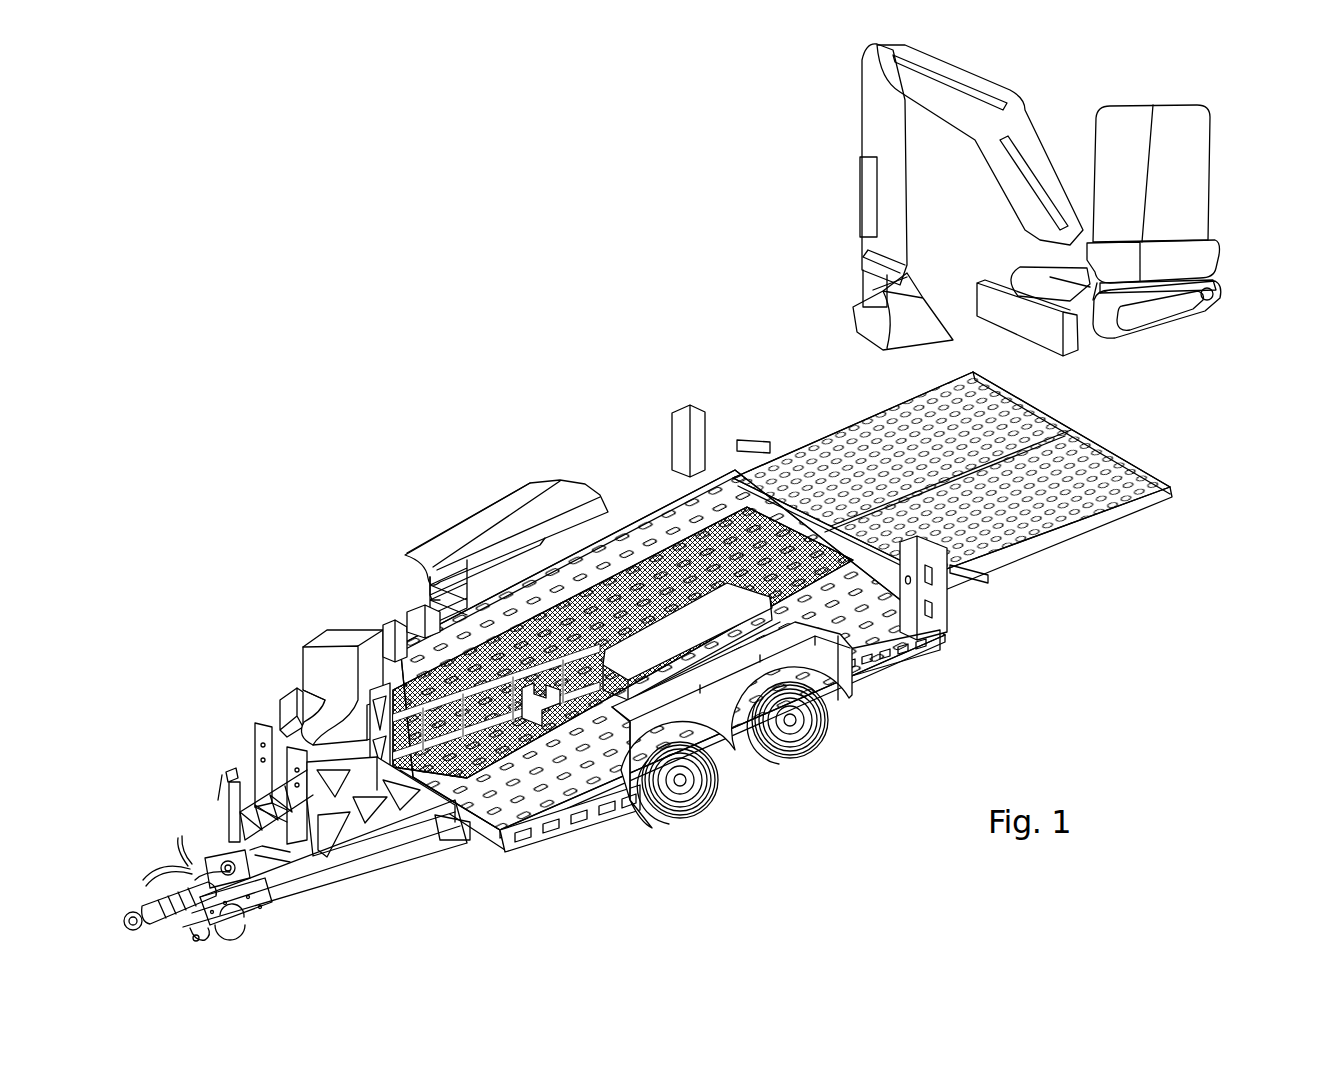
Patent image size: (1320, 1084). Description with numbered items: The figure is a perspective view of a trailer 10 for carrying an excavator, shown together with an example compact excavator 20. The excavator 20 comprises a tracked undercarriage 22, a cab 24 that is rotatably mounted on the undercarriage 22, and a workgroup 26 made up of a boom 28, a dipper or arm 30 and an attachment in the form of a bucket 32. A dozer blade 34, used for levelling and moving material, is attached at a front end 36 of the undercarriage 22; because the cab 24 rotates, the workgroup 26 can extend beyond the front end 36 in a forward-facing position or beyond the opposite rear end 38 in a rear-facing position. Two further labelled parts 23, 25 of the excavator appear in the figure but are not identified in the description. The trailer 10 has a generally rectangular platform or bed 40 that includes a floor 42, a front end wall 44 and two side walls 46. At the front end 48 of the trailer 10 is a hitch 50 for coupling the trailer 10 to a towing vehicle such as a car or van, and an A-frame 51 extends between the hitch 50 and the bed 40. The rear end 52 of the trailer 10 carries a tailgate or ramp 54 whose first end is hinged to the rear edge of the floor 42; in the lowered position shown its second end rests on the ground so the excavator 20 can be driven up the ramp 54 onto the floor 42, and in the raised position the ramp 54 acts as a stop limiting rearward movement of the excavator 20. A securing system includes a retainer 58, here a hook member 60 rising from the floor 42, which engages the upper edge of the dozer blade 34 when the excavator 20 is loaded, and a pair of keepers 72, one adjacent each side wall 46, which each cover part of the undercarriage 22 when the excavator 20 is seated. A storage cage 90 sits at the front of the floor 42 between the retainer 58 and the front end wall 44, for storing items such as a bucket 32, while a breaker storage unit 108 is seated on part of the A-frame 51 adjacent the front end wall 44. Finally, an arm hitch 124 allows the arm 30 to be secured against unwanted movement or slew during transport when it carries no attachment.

The trailer 10 is at (648, 669).
The compact excavator 20 is at (1011, 224).
The tracked undercarriage 22 is at (1187, 299).
The boom swing mount 23 is at (1031, 280).
The cab 24 is at (1185, 120).
The track frame 25 is at (991, 278).
The workgroup 26 is at (912, 196).
The boom 28 is at (990, 117).
The arm 30 is at (875, 137).
The bucket 32 is at (863, 322).
The dozer blade 34 is at (1033, 325).
The front end 36 is at (1082, 316).
The rear end 38 is at (1216, 274).
The platform or bed 40 is at (623, 557).
The floor 42 is at (655, 705).
The front end wall 44 is at (434, 795).
The side walls 46 is at (312, 693).
The front end 48 is at (326, 883).
The hitch 50 is at (155, 915).
The A-frame 51 is at (355, 870).
The rear end 52 is at (953, 612).
The ramp 54 is at (1055, 530).
The retainer 58 is at (418, 625).
The hook member 60 is at (395, 633).
The keepers 72 is at (507, 537).
The storage cage 90 is at (490, 690).
The breaker storage unit 108 is at (367, 658).
The arm hitch 124 is at (262, 765).